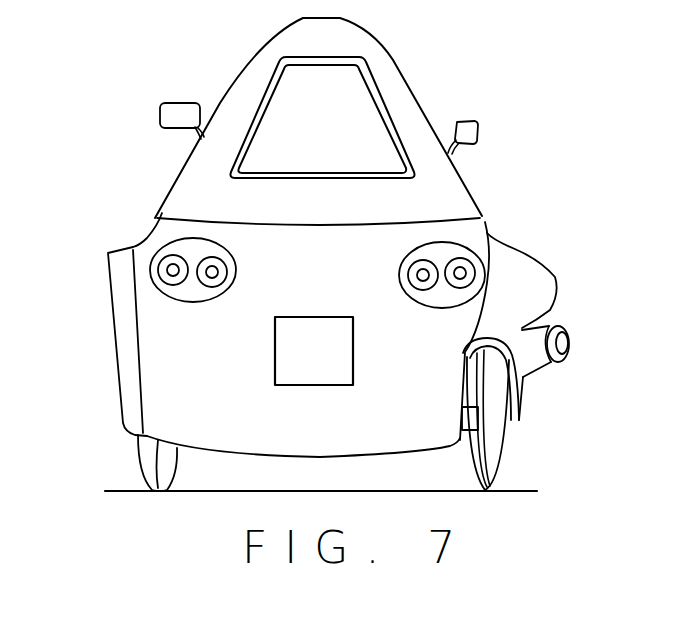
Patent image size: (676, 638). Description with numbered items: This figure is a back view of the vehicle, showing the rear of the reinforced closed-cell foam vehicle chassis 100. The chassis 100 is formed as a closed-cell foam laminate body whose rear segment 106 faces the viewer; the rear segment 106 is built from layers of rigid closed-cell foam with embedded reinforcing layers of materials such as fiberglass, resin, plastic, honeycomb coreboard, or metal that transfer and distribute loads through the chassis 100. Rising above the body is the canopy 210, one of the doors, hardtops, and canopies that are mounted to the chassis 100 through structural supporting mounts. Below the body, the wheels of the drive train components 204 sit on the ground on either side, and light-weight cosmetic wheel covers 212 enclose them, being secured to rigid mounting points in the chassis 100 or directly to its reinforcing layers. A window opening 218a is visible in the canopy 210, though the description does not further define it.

The vehicle chassis 100 is at (412, 397).
The rear segment 106 is at (228, 397).
The drive train components 204 is at (155, 477).
The canopy 210 is at (395, 78).
The wheel covers 212 is at (125, 353).
The window 218a is at (358, 125).